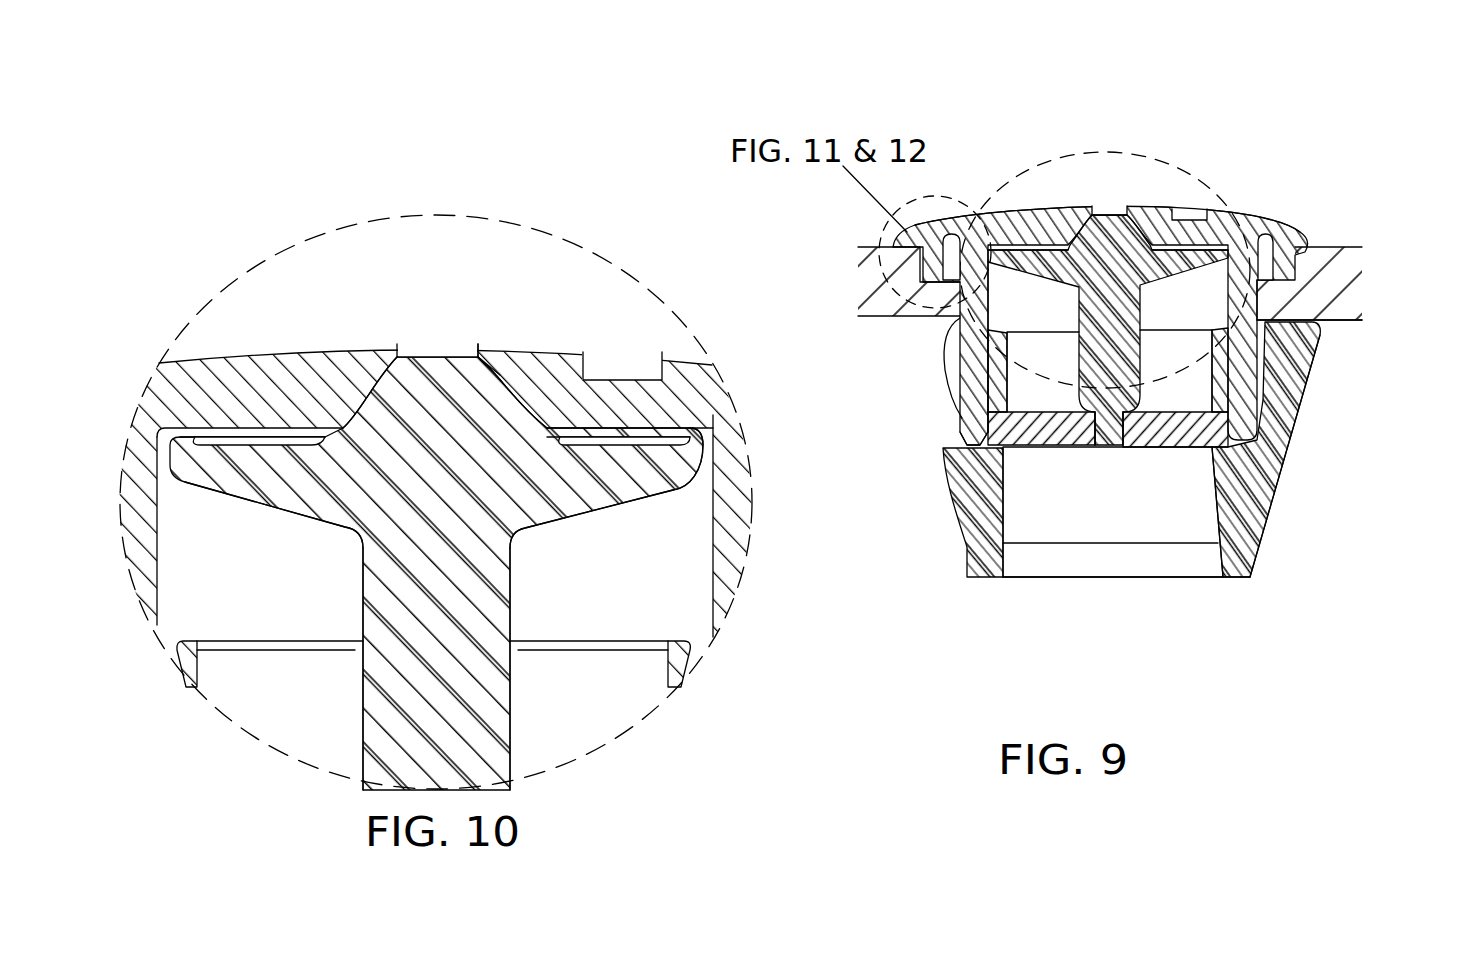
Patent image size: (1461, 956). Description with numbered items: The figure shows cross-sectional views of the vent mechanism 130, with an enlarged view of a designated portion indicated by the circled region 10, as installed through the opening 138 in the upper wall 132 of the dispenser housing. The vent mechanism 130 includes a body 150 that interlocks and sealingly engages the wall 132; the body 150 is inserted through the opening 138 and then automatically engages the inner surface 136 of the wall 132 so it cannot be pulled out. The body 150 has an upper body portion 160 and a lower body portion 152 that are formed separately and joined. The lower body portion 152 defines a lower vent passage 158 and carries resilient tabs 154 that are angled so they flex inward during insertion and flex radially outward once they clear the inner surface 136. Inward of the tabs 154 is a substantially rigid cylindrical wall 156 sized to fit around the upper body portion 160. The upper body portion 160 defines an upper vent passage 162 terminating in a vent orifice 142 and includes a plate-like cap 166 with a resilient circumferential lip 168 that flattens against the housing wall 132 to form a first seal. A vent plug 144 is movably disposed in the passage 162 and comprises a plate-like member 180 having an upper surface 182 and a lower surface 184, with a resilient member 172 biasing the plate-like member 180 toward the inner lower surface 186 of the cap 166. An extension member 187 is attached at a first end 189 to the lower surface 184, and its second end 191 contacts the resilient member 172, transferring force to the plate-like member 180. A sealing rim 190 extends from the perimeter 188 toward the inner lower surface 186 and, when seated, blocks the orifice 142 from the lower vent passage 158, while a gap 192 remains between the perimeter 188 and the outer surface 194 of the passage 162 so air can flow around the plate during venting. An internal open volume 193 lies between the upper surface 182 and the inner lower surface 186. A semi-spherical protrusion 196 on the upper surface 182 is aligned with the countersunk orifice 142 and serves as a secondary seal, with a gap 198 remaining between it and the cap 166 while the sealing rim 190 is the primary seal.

In FIG. 9, the closure detail region 10 is at (1140, 152).
In FIG. 9, the vent mechanism 130 is at (1138, 327).
In FIG. 9, the upper wall 132 is at (1335, 262).
In FIG. 9, the inner surface 136 is at (1347, 321).
In FIG. 9, the opening 138 is at (1266, 252).
In FIG. 10, the vent orifice 142 is at (460, 344).
In FIG. 9, the vent orifice 142 is at (1105, 209).
In FIG. 10, the vent plug 144 is at (467, 410).
In FIG. 9, the vent plug 144 is at (1110, 268).
In FIG. 9, the body 150 is at (1306, 431).
In FIG. 9, the lower body portion 152 is at (978, 470).
In FIG. 9, the resilient tabs 154 is at (1267, 460).
In FIG. 10, the cylindrical wall 156 is at (183, 643).
In FIG. 9, the cylindrical wall 156 is at (980, 410).
In FIG. 10, the lower vent passage 158 is at (600, 671).
In FIG. 9, the lower vent passage 158 is at (1050, 566).
In FIG. 9, the upper body portion 160 is at (975, 365).
In FIG. 10, the upper vent passage 162 is at (695, 552).
In FIG. 9, the upper vent passage 162 is at (1013, 307).
In FIG. 10, the cap 166 is at (300, 362).
In FIG. 9, the cap 166 is at (1237, 228).
In FIG. 9, the resilient circumferential lip 168 is at (1300, 232).
In FIG. 9, the resilient member 172 is at (1047, 446).
In FIG. 10, the plate-like member 180 is at (575, 475).
In FIG. 9, the plate-like member 180 is at (975, 310).
In FIG. 10, the upper surface 182 is at (262, 446).
In FIG. 10, the lower surface 184 is at (320, 527).
In FIG. 10, the inner lower surface 186 is at (262, 441).
In FIG. 9, the extension member 187 is at (1117, 376).
In FIG. 10, the perimeter 188 is at (655, 479).
In FIG. 9, the first end 189 is at (1143, 297).
In FIG. 10, the sealing rim 190 is at (691, 446).
In FIG. 9, the second end 191 is at (1122, 447).
In FIG. 10, the gap 192 is at (712, 462).
In FIG. 10, the internal open volume 193 is at (597, 436).
In FIG. 10, the outer surface 194 is at (713, 588).
In FIG. 10, the protrusion 196 is at (437, 372).
In FIG. 9, the protrusion 196 is at (1050, 252).
In FIG. 10, the gap 198 is at (373, 358).